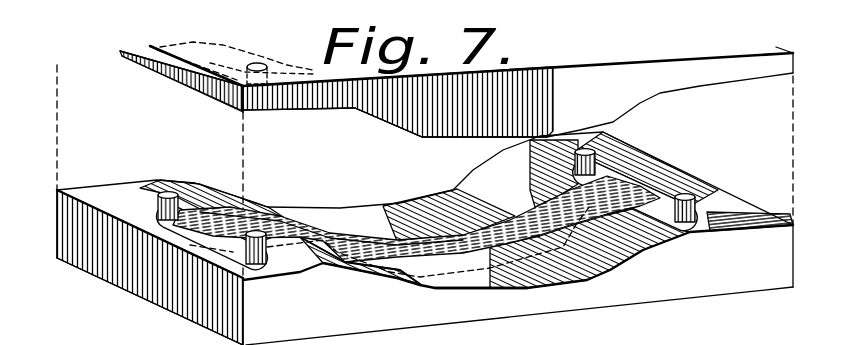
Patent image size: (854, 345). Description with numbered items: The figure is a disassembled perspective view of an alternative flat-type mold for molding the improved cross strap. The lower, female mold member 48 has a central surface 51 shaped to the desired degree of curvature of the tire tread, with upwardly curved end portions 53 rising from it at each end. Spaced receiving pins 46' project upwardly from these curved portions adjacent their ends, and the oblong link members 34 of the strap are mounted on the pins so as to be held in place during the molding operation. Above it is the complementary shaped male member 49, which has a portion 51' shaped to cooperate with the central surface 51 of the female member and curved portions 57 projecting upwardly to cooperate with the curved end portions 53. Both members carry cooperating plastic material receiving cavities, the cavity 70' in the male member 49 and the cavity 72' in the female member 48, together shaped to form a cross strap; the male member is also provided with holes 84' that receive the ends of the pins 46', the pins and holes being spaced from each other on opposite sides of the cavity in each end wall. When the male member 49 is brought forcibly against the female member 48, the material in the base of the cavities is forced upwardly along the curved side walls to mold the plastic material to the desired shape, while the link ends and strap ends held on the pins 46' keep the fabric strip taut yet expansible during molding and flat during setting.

The male member 49 is at (720, 74).
The curved portions 57 is at (356, 108).
The portion 51' is at (412, 138).
The plastic material receiving cavity 70' is at (235, 86).
The holes 84' is at (232, 107).
The female mold member 48 is at (425, 238).
The upwardly curved end portions 53 is at (404, 280).
The central surface 51 is at (493, 316).
The link members 34 is at (265, 266).
The plastic material receiving cavity 72' is at (416, 239).
The receiving pins 46' is at (386, 214).